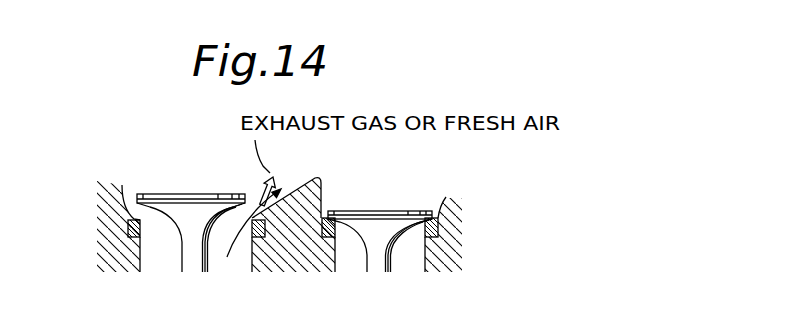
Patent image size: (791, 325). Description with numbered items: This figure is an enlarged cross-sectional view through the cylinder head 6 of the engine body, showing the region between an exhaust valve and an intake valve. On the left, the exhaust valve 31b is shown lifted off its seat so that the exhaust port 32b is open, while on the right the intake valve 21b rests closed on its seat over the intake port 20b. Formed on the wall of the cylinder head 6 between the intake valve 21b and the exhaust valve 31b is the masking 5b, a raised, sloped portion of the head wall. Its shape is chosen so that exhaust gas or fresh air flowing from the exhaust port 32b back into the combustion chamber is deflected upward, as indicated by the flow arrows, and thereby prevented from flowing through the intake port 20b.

The exhaust valve 31b is at (202, 193).
The intake valve 21b is at (388, 215).
The exhaust port 32b is at (157, 258).
The intake port 20b is at (348, 265).
The masking 5b is at (305, 195).
The cylinder head 6 is at (300, 272).